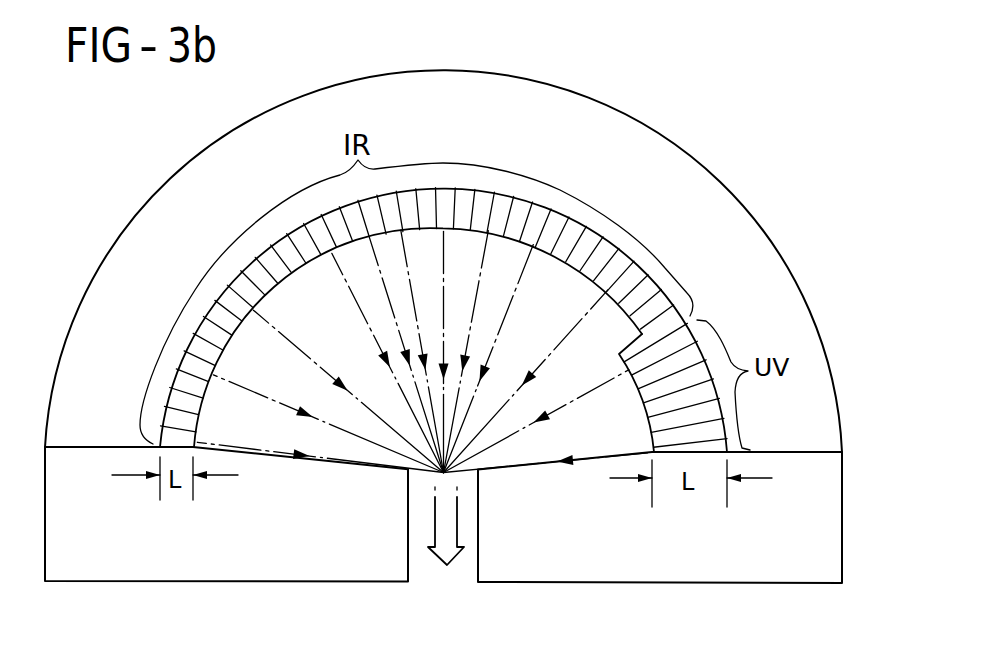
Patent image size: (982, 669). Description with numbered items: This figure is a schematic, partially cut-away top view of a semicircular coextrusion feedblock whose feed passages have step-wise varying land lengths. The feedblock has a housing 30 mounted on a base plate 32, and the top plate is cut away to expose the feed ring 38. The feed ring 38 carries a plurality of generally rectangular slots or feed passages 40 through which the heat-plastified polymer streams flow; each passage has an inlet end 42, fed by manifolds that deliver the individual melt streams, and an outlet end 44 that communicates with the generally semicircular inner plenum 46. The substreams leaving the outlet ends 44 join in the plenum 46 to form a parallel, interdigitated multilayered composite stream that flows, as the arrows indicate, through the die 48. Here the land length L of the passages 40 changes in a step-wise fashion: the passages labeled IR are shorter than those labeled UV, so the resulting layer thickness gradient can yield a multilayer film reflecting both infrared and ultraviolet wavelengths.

The housing 30 is at (660, 158).
The base plate 32 is at (707, 562).
The feed ring 38 is at (480, 178).
The feed passages 40 is at (600, 212).
The inlet ends 42 is at (690, 299).
The outlet ends 44 is at (608, 306).
The inner plenum 46 is at (332, 318).
The die 48 is at (468, 565).